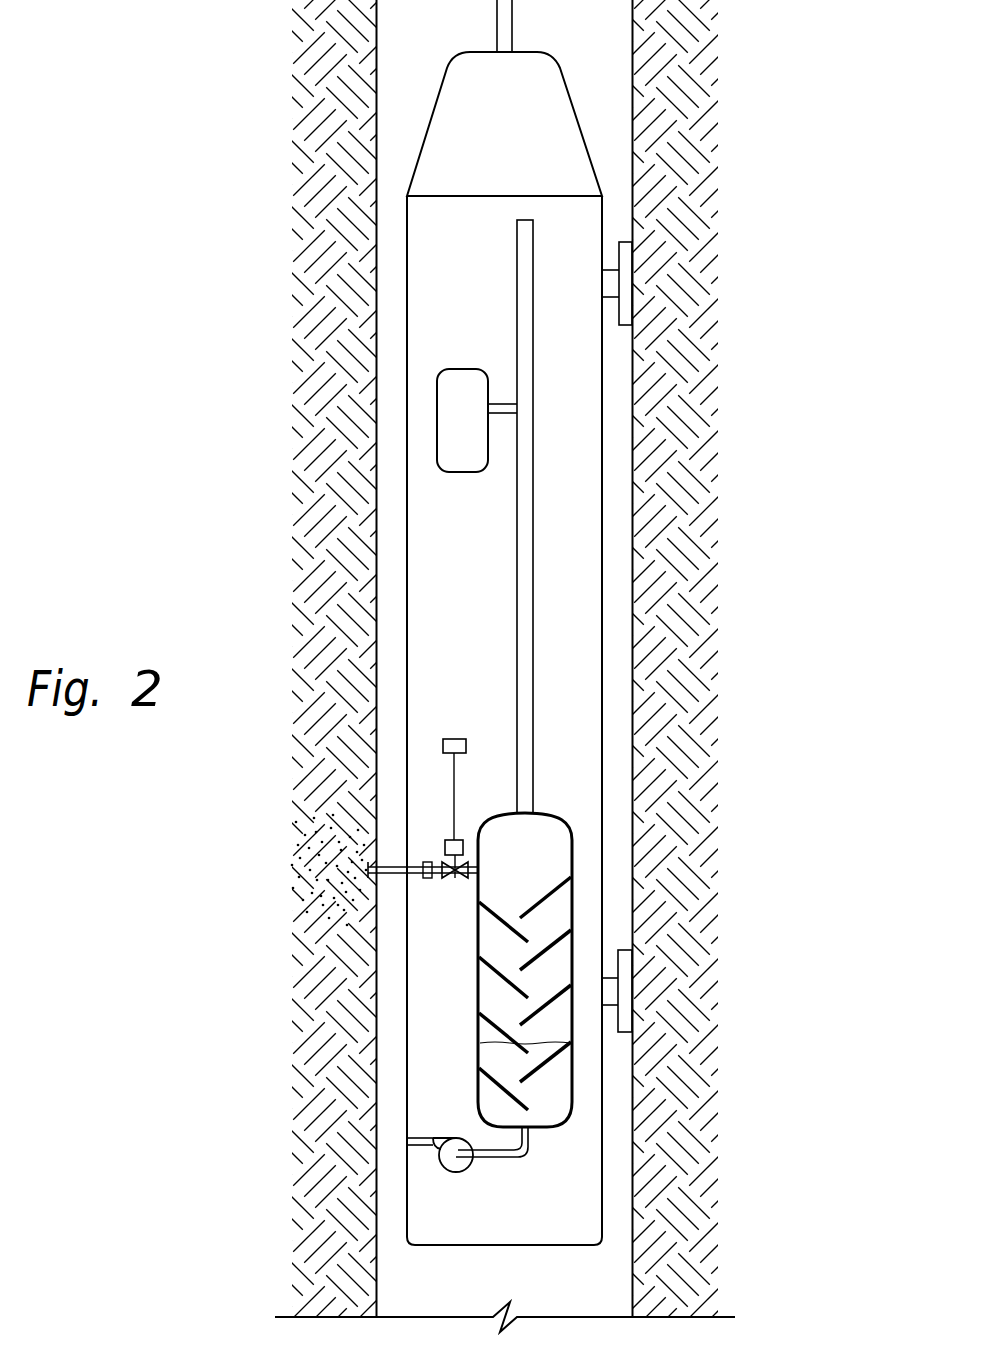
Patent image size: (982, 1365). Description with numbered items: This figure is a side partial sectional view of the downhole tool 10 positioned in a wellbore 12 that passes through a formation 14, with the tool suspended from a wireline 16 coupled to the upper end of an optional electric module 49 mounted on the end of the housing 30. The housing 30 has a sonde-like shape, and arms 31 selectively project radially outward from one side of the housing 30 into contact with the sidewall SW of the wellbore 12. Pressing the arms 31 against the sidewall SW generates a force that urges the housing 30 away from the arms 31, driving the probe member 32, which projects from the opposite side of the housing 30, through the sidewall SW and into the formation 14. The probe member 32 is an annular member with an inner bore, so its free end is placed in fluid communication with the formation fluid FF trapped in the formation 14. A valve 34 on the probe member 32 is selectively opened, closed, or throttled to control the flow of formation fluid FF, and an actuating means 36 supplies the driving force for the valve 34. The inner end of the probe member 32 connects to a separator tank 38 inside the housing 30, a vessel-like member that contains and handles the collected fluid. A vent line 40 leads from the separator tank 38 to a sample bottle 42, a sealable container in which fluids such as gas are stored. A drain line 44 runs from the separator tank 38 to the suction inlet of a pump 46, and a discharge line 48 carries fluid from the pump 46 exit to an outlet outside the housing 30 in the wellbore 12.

The downhole tool 10 is at (574, 681).
The wellbore 12 is at (376, 11).
The formation 14 is at (305, 441).
The wireline 16 is at (513, 11).
The housing 30 is at (552, 1246).
The arms 31 is at (624, 283).
The probe member 32 is at (391, 866).
The valve 34 is at (456, 880).
The actuating means 36 is at (455, 738).
The separator tank 38 is at (557, 805).
The vent line 40 is at (516, 600).
The sample bottle 42 is at (460, 368).
The drain line 44 is at (507, 1158).
The pump 46 is at (457, 1173).
The discharge line 48 is at (422, 1138).
The electric module 49 is at (437, 110).
The sidewall SW is at (632, 112).
The formation fluid FF is at (303, 862).